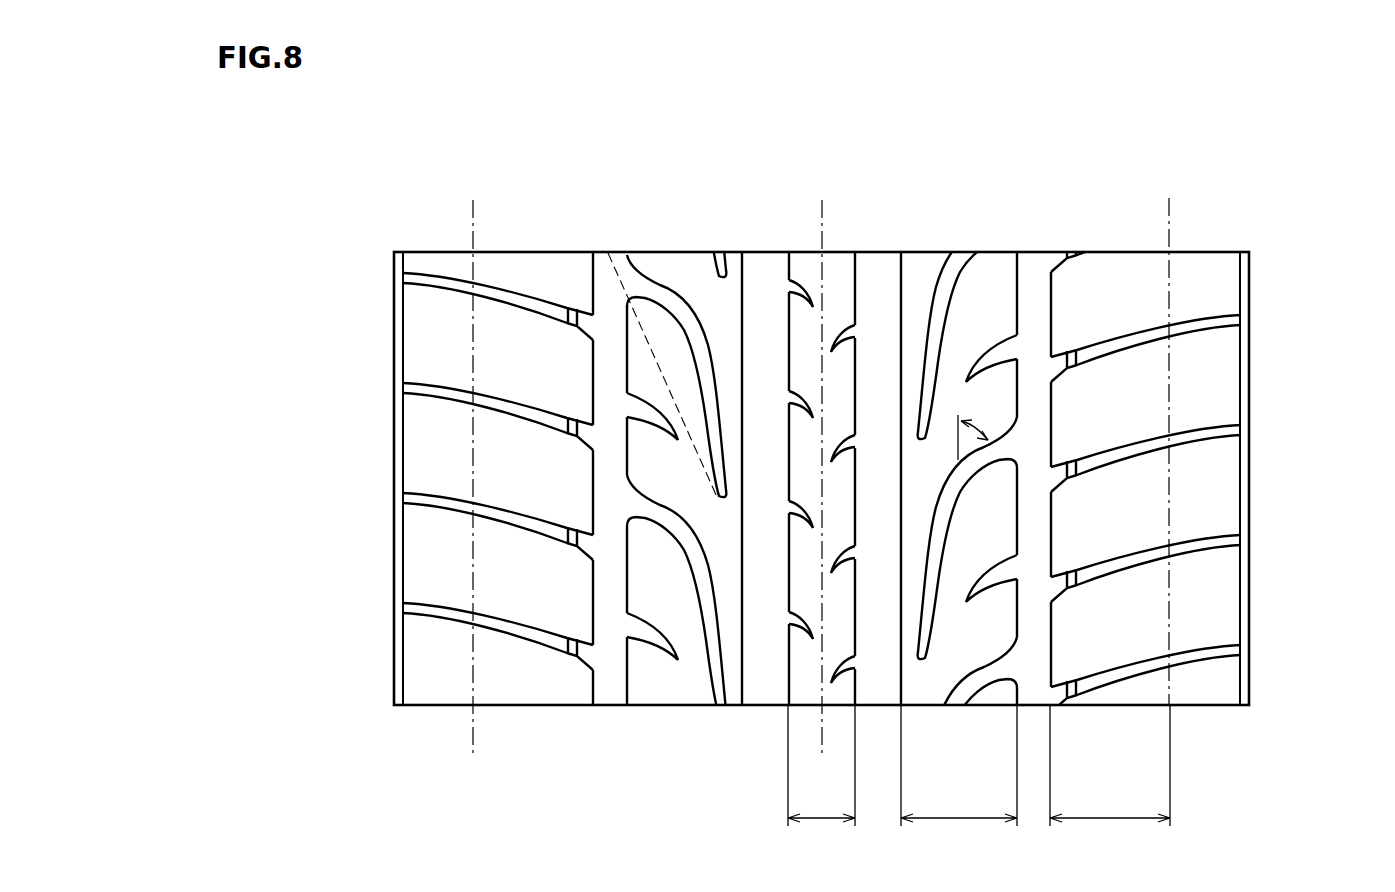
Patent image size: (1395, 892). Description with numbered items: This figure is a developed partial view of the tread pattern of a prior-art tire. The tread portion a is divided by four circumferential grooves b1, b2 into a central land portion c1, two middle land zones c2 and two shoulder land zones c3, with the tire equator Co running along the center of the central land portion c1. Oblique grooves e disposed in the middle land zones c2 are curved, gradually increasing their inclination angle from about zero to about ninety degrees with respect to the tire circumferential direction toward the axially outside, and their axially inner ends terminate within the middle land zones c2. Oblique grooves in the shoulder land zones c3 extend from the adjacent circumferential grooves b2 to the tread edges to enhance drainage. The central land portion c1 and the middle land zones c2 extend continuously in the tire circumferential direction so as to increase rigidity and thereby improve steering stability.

The tread portion a is at (1263, 238).
The circumferential groove b1 is at (760, 280).
The circumferential groove b2 is at (609, 268).
The tire equator (center line) Co is at (821, 465).
The oblique groove e is at (688, 313).
The central land portion c1 is at (821, 778).
The middle land zone c2 is at (959, 778).
The shoulder land zone c3 is at (1110, 778).